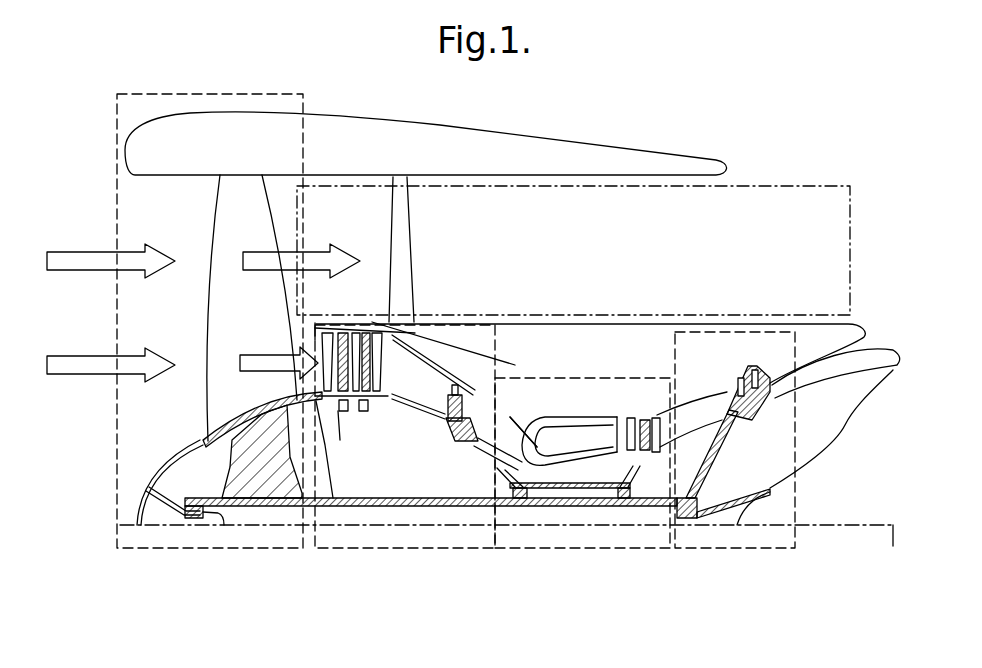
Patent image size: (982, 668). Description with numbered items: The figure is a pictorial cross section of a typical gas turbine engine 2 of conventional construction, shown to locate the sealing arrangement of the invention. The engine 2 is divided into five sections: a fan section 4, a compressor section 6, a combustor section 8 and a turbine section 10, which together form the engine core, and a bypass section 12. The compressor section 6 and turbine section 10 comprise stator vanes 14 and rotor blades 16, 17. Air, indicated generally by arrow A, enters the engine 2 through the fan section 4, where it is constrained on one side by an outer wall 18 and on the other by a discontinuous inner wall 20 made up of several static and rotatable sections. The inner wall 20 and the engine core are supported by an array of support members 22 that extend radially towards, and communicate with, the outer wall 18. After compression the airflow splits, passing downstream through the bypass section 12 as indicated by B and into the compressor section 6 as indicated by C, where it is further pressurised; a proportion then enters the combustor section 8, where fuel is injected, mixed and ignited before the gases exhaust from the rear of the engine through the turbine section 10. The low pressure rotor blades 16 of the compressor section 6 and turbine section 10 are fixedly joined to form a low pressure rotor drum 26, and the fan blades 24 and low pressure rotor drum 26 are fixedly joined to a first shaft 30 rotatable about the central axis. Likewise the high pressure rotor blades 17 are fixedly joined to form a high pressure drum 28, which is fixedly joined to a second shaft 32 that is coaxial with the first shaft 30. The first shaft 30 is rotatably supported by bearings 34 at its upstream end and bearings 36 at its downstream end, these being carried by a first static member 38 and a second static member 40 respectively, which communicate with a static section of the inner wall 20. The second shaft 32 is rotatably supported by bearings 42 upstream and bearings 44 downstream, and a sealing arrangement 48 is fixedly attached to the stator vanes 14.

The gas turbine engine 2 is at (644, 92).
The fan section 4 is at (195, 90).
The compressor section 6 is at (395, 556).
The combustor section 8 is at (624, 556).
The turbine section 10 is at (795, 556).
The bypass section 12 is at (755, 180).
The stator vanes 14 is at (348, 335).
The low pressure rotor blades 16 is at (752, 366).
The high pressure rotor blades 17 is at (638, 417).
The outer wall 18 is at (324, 125).
The inner wall 20 is at (157, 472).
The support members 22 is at (407, 265).
The fan blades 24 is at (222, 232).
The low pressure rotor drum 26 is at (328, 440).
The high pressure drum 28 is at (605, 415).
The first shaft 30 is at (333, 501).
The second shaft 32 is at (565, 489).
The bearings 34 is at (222, 519).
The bearings 36 is at (680, 519).
The first static member 38 is at (163, 518).
The second static member 40 is at (772, 492).
The bearings 42 is at (517, 500).
The bearings 44 is at (620, 507).
The sealing arrangement 48 is at (673, 507).